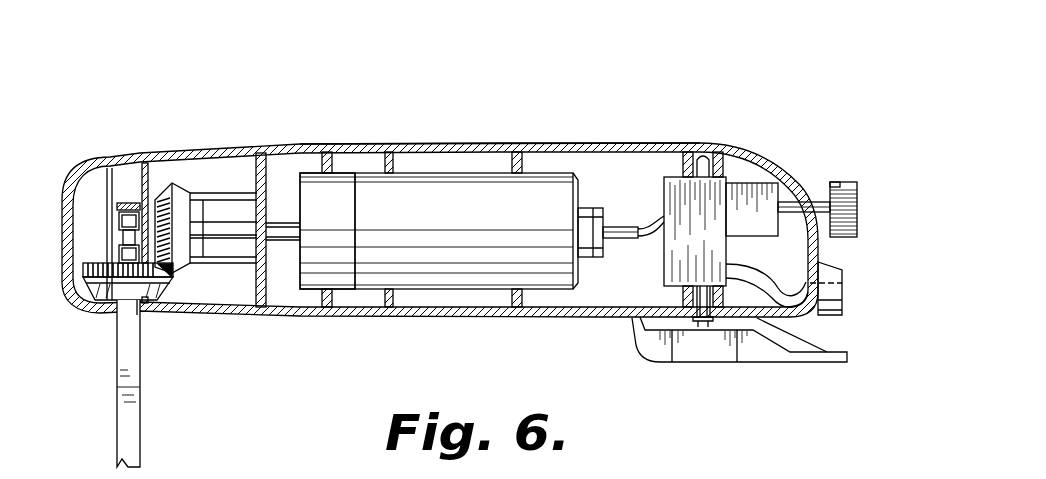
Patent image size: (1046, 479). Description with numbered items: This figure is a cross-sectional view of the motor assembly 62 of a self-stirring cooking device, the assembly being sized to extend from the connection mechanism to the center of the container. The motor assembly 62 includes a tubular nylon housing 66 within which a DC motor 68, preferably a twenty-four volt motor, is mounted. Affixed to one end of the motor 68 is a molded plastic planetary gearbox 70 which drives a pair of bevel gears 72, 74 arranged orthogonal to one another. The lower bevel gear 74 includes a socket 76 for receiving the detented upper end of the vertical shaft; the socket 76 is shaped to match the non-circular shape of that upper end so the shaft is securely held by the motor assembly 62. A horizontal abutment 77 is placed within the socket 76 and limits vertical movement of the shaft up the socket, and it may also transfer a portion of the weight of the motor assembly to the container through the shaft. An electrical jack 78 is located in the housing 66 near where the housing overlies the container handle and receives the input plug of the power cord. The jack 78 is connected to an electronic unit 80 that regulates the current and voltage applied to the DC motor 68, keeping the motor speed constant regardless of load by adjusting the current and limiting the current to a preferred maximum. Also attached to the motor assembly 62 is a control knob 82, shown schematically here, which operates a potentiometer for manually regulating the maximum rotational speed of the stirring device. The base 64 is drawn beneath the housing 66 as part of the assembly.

The motor assembly 62 is at (572, 140).
The base 64 is at (582, 317).
The tubular nylon housing 66 is at (657, 150).
The DC motor 68 is at (444, 184).
The planetary gearbox 70 is at (315, 184).
The bevel gear 72 is at (183, 185).
The lower bevel gear 74 is at (93, 301).
The socket 76 is at (140, 302).
The horizontal abutment 77 is at (125, 202).
The electrical jack 78 is at (842, 285).
The electronic unit 80 is at (708, 180).
The control knob 82 is at (840, 185).